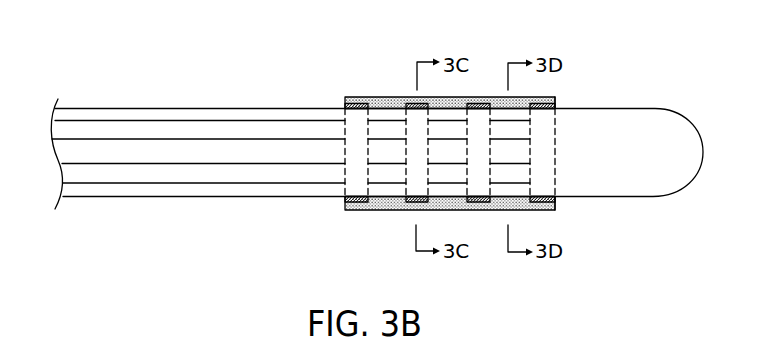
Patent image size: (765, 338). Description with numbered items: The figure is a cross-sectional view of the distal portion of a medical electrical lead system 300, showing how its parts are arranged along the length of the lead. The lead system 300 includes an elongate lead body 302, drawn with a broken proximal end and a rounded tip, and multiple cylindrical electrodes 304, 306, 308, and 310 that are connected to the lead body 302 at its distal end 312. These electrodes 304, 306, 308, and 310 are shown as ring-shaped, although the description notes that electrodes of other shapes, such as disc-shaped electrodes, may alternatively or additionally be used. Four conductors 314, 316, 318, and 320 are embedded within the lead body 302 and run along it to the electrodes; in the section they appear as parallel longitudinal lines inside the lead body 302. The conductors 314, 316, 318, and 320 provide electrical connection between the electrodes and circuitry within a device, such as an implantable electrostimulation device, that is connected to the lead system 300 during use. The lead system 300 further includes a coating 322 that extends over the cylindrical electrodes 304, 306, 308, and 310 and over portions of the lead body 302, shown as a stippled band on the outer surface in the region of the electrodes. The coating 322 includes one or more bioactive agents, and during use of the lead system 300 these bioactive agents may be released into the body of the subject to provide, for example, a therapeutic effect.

The medical electrical lead system 300 is at (211, 89).
The lead body 302 is at (247, 197).
The cylindrical electrode 304 is at (350, 104).
The cylindrical electrode 306 is at (415, 201).
The cylindrical electrode 308 is at (482, 107).
The cylindrical electrode 310 is at (551, 209).
The distal end 312 is at (545, 221).
The conductor 314 is at (85, 120).
The conductor 316 is at (137, 139).
The conductor 318 is at (135, 164).
The conductor 320 is at (182, 184).
The coating 322 is at (393, 98).